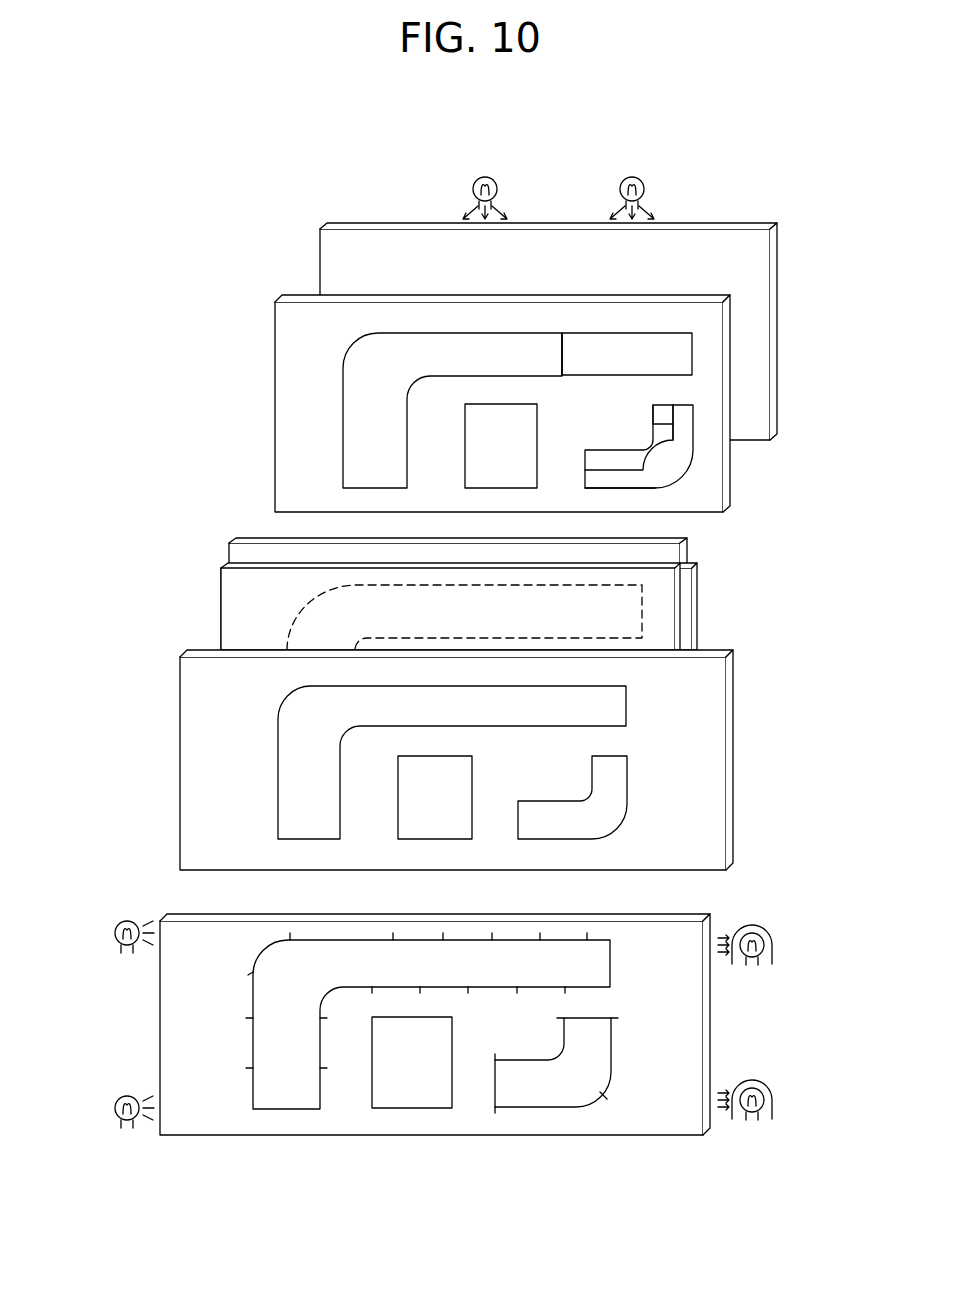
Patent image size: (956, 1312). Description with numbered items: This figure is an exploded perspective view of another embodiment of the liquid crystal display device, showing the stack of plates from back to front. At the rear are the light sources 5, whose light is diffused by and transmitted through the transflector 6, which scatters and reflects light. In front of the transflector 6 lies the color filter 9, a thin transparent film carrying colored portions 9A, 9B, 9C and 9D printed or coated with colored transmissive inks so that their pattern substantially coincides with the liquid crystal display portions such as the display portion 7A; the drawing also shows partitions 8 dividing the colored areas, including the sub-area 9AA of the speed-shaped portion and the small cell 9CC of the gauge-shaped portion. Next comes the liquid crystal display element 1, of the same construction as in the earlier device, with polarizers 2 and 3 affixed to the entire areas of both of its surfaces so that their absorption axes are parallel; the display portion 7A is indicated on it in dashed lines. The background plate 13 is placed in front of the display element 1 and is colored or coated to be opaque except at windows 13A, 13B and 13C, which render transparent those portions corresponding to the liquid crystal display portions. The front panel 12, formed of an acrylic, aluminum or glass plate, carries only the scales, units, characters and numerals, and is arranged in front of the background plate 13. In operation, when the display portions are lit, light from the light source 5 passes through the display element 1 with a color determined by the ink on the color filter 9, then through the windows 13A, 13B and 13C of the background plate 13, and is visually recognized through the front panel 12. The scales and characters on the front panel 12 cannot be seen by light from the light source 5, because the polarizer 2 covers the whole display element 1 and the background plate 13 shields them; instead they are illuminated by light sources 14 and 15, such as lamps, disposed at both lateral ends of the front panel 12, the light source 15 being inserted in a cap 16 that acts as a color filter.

The liquid crystal display element 1 is at (688, 550).
The polarizer 2 is at (226, 588).
The polarizer 3 is at (698, 583).
The light source 5 is at (498, 187).
The transflector 6 is at (320, 262).
The liquid crystal display portion 7A is at (660, 617).
The partition 8 is at (567, 345).
The color filter 9 is at (733, 482).
The colored portion 9A is at (353, 463).
The window section 9AA is at (628, 353).
The colored portion 9B is at (468, 479).
The colored portion 9C is at (593, 456).
The window cell 9CC is at (653, 410).
The colored portion 9D is at (590, 481).
The front panel 12 is at (645, 1136).
The background plate 13 is at (727, 693).
The window 13A is at (308, 836).
The window 13B is at (428, 836).
The window 13C is at (555, 836).
The light source 14 is at (115, 932).
The light source 15 is at (752, 958).
The cap 16 is at (772, 932).